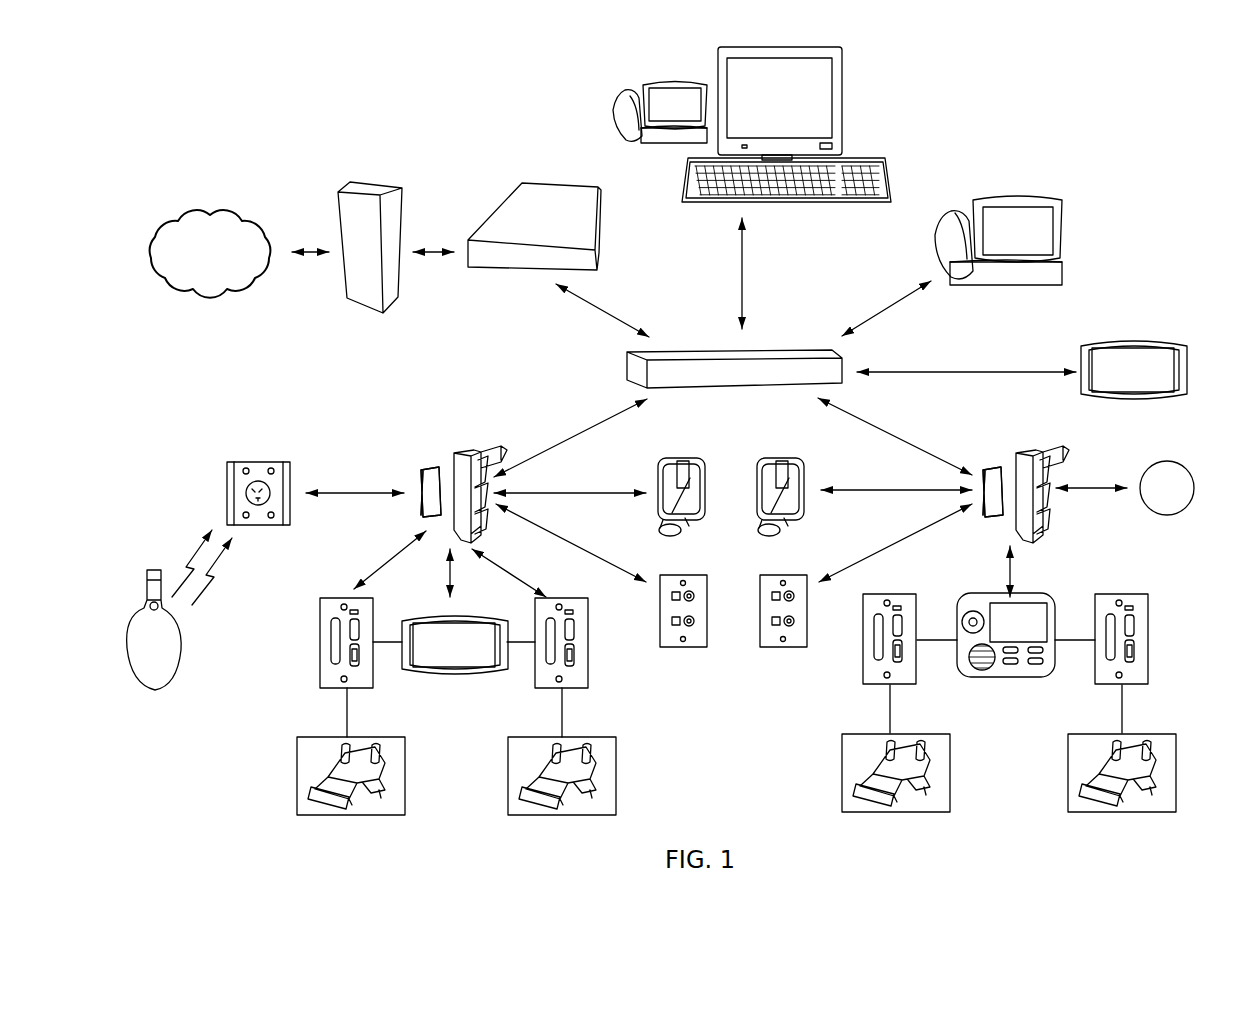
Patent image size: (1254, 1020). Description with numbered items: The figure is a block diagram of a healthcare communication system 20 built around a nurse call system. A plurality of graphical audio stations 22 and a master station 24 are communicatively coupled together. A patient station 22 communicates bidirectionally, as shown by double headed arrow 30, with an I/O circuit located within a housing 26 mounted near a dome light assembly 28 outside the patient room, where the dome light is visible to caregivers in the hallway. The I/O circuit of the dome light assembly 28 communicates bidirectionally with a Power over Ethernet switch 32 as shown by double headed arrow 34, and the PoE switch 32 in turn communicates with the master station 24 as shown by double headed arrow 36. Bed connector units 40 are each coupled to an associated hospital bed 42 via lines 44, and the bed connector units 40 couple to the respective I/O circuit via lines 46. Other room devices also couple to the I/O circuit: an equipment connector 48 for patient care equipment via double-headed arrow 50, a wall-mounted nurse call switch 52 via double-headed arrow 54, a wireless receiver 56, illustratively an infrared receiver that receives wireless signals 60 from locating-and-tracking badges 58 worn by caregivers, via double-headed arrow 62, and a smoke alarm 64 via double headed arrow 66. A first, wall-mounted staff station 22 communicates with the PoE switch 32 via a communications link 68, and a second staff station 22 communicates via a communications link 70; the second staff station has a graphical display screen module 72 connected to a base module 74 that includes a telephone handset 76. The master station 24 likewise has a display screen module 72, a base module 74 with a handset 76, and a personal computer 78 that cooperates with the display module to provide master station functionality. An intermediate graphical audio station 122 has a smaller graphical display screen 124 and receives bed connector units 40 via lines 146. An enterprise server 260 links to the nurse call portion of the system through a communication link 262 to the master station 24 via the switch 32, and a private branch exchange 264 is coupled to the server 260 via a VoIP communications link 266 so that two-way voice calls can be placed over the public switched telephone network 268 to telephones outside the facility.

The healthcare communication system 20 is at (407, 98).
The graphical audio station 22 is at (1022, 233).
The master station 24 is at (620, 111).
The housing 26 is at (434, 470).
The dome light assembly 28 is at (454, 470).
The double headed arrow 30 is at (446, 575).
The Power over Ethernet (PoE) switch 32 is at (700, 352).
The double headed arrow 34 is at (584, 430).
The double headed arrow 36 is at (742, 268).
The bed connector unit 40 is at (318, 638).
The hospital bed 42 is at (352, 815).
The lines 44 is at (354, 716).
The lines 46 is at (384, 559).
The equipment connector 48 is at (684, 658).
The double-headed arrow 50 is at (608, 555).
The wall-mounted nurse call switch 52 is at (672, 450).
The double-headed arrow 54 is at (596, 493).
The wireless receiver 56 is at (258, 450).
The locating-and-tracking badge 58 is at (164, 672).
The wireless signals 60 is at (190, 551).
The double-headed arrow 62 is at (358, 491).
The smoke alarm 64 is at (1174, 460).
The double headed arrow 66 is at (1102, 489).
The communications link 68 is at (938, 372).
The communications link 70 is at (884, 308).
The graphical display screen module 72 is at (672, 88).
The base module 74 is at (662, 142).
The telephone handset 76 is at (624, 112).
The personal computer 78 is at (822, 109).
The graphical audio station 122 is at (1006, 687).
The graphical display screen 124 is at (1032, 603).
The lines 146 is at (939, 620).
The enterprise server 260 is at (554, 187).
The communication link 262 is at (590, 311).
The private branch exchange (PBX) 264 is at (370, 192).
The VoIP communications link 266 is at (440, 252).
The public switched telephone network (PSTN) 268 is at (222, 214).